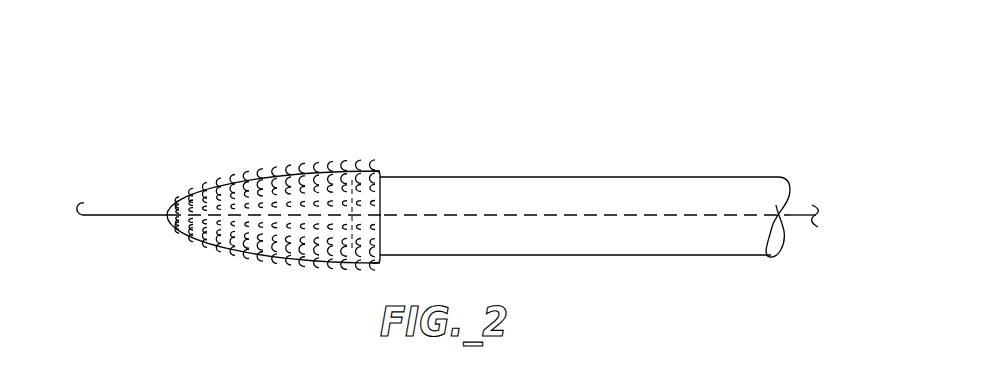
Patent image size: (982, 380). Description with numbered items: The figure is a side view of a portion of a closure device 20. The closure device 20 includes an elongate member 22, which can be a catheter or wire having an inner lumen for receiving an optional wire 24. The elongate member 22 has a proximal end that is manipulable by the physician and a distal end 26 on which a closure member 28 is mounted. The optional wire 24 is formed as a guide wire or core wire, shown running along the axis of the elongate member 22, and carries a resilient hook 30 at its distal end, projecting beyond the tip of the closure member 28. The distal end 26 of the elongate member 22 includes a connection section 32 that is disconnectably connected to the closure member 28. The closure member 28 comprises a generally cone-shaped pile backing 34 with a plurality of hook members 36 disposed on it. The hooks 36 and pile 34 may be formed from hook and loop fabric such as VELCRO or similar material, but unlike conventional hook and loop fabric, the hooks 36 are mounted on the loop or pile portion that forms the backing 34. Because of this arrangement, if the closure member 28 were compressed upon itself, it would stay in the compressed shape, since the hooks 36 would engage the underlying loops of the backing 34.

The closure device 20 is at (539, 101).
The elongate member 22 is at (638, 176).
The optional wire 24 is at (725, 214).
The distal end 26 is at (391, 166).
The closure member 28 is at (273, 208).
The resilient hook 30 is at (78, 200).
The connection section 32 is at (350, 250).
The pile backing 34 is at (270, 253).
The hook members 36 is at (262, 166).